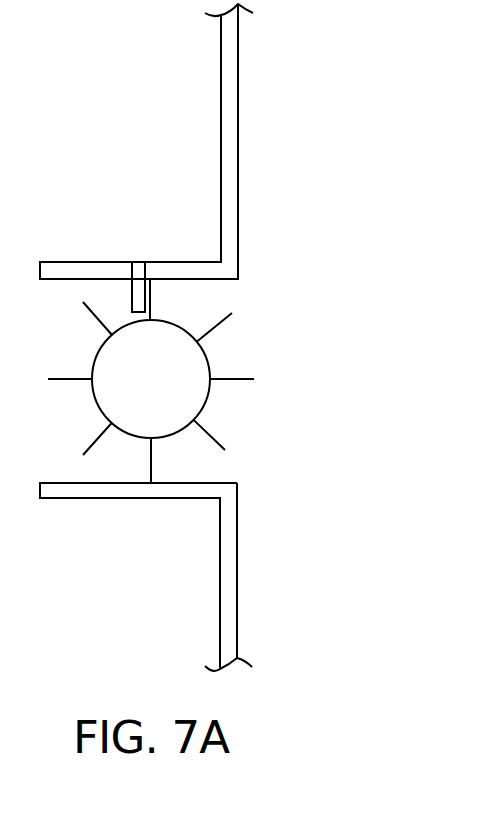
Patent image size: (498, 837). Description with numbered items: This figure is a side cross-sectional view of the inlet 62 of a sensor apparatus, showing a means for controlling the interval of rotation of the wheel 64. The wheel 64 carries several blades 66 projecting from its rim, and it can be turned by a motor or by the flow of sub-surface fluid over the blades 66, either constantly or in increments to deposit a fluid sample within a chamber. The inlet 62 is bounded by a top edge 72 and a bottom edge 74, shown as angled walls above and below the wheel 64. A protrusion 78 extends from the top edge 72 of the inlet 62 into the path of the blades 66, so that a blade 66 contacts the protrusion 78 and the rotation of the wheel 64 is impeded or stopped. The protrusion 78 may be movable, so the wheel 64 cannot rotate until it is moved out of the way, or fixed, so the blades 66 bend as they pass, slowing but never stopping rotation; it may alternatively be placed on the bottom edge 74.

The inlet 62 is at (180, 372).
The wheel 64 is at (200, 404).
The blades 66 is at (152, 296).
The top edge 72 is at (86, 262).
The bottom edge 74 is at (92, 498).
The protrusion 78 is at (136, 262).